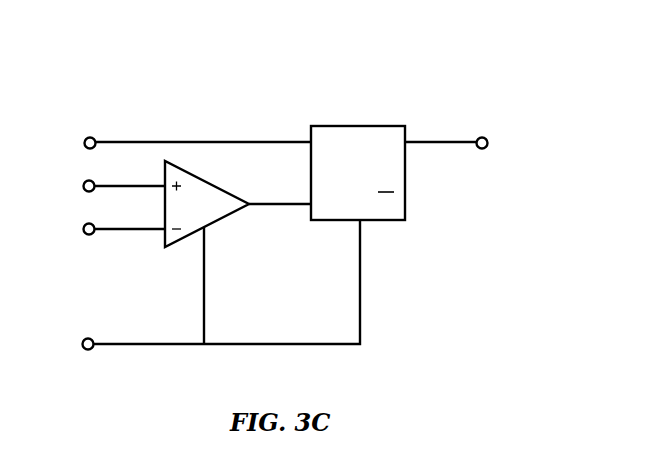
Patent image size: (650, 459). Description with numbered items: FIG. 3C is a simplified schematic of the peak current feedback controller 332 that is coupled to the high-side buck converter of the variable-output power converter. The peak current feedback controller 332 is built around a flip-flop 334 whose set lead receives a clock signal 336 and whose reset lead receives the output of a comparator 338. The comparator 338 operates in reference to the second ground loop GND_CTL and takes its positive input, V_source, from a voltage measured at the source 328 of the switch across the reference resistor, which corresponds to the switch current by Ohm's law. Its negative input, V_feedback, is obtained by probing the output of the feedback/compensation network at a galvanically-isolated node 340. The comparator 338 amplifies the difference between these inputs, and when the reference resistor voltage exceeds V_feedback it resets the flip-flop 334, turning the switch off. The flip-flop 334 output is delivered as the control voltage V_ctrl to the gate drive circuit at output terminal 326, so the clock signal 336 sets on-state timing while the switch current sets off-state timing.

The peak current feedback controller 332 is at (113, 63).
The clock signal 336 is at (84, 143).
The source 328 is at (84, 187).
The galvanically-isolated node 340 is at (84, 230).
The comparator 338 is at (165, 242).
The flip-flop 334 is at (406, 187).
The control voltage output terminal 326 is at (488, 143).